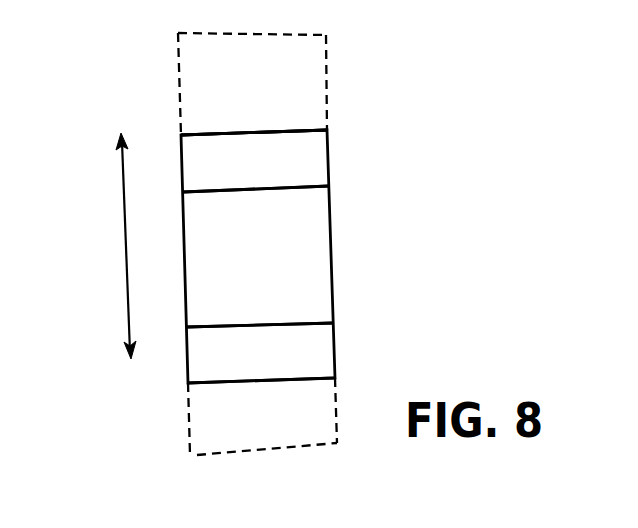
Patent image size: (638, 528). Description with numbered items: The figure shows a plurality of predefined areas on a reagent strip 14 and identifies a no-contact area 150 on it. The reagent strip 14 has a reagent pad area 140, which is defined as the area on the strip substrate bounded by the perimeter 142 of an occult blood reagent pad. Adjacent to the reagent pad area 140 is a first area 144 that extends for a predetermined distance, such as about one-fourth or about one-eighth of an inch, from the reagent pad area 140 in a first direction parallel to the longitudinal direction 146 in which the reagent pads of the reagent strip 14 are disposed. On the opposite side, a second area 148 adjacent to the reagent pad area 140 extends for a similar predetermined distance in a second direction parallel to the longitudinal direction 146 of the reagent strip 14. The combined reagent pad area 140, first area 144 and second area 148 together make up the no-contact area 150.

The reagent strip 14 is at (178, 93).
The reagent pad area 140 is at (317, 218).
The perimeter 142 is at (333, 278).
The first area 144 is at (310, 162).
The longitudinal direction 146 is at (127, 270).
The second area 148 is at (323, 353).
The no-contact area 150 is at (277, 131).